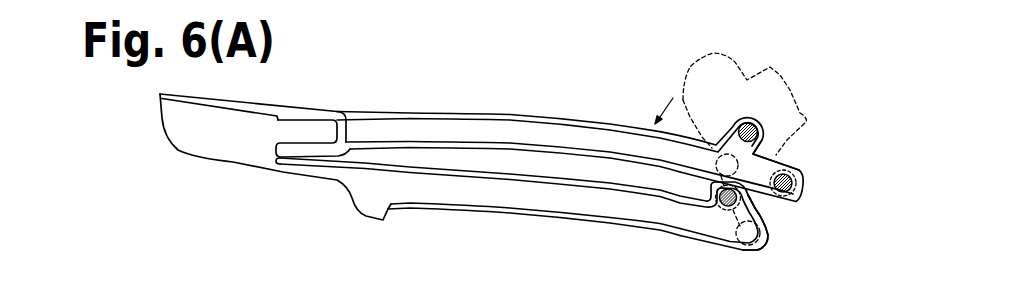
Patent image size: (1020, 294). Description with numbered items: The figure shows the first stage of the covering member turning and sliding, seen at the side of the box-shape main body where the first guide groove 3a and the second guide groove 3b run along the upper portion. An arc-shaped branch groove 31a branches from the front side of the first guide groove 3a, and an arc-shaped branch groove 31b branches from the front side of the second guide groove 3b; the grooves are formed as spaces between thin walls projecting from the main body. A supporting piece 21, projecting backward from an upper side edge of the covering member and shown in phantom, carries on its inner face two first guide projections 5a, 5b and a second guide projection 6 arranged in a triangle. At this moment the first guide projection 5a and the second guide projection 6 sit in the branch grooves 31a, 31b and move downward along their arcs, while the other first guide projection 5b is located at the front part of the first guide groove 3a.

The first guide groove 3a is at (510, 133).
The second guide groove 3b is at (513, 190).
The first guide projection 5a is at (758, 120).
The first guide projection 5b is at (806, 177).
The second guide projection 6 is at (717, 207).
The supporting piece 21 is at (727, 63).
The branch groove 31a is at (786, 160).
The branch groove 31b is at (766, 208).